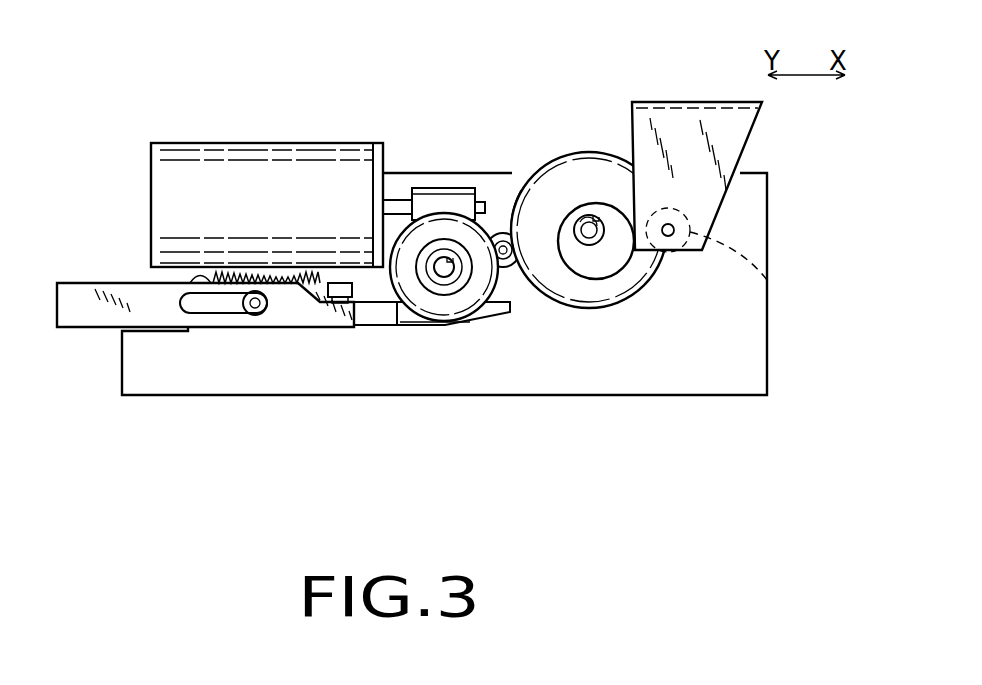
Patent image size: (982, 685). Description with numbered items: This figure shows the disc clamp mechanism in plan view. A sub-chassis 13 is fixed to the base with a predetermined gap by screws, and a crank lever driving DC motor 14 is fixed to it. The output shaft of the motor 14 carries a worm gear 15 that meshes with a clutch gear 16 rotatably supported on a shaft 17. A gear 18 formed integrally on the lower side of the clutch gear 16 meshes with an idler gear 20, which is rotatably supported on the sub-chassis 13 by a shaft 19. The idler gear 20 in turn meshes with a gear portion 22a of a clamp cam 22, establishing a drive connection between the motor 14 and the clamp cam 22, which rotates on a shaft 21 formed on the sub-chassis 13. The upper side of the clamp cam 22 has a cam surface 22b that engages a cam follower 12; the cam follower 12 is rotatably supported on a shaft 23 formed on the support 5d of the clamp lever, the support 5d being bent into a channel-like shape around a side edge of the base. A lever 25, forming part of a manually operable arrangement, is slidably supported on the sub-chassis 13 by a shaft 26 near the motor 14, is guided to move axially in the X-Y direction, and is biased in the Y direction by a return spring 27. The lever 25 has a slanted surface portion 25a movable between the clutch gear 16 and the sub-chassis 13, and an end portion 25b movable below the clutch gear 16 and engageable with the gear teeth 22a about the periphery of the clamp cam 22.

The support 5d is at (722, 148).
The cam follower 12 is at (767, 280).
The sub-chassis 13 is at (153, 382).
The crank lever driving DC motor 14 is at (245, 157).
The worm gear 15 is at (432, 193).
The clutch gear 16 is at (446, 262).
The shaft 17 is at (503, 245).
The gear 18 is at (402, 199).
The shaft 19 is at (455, 312).
The idler gear 20 is at (511, 206).
The shaft 21 is at (597, 213).
The clamp cam 22 is at (581, 170).
The gear portion 22a is at (608, 279).
The cam surface 22b is at (589, 246).
The shaft 23 is at (670, 223).
The lever 25 is at (83, 295).
The slanted surface portion 25a is at (370, 318).
The end portion 25b is at (498, 312).
The shaft 26 is at (252, 313).
The return spring 27 is at (312, 303).